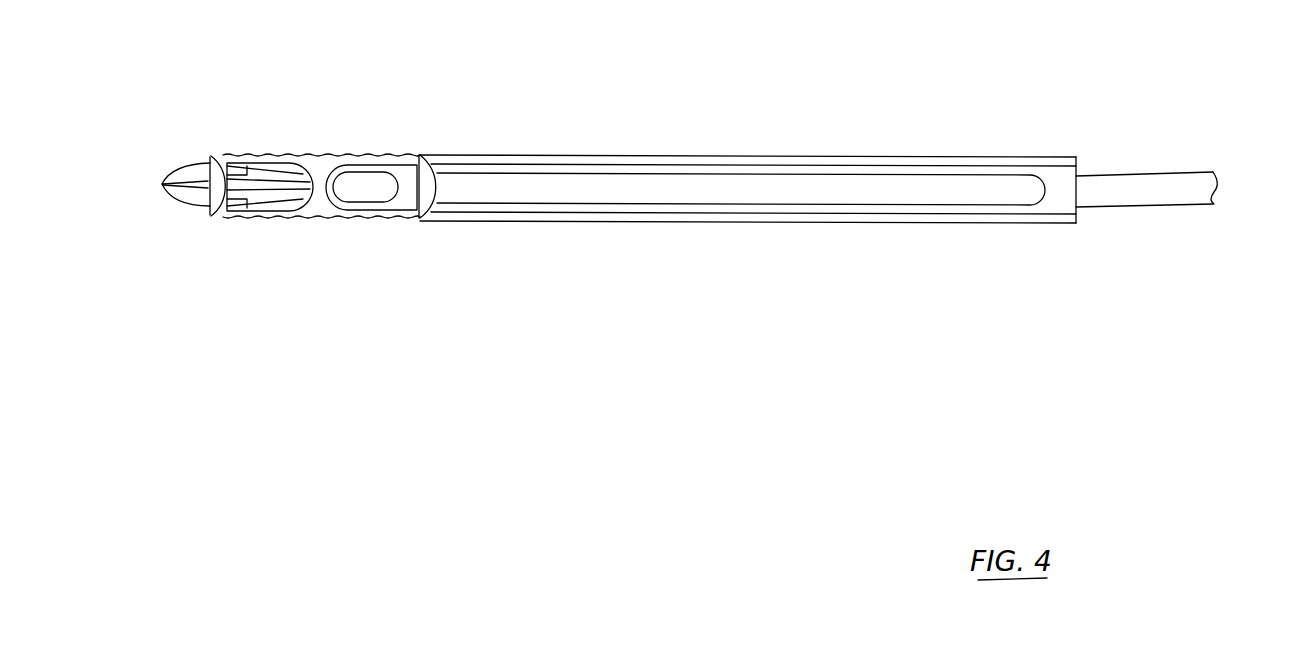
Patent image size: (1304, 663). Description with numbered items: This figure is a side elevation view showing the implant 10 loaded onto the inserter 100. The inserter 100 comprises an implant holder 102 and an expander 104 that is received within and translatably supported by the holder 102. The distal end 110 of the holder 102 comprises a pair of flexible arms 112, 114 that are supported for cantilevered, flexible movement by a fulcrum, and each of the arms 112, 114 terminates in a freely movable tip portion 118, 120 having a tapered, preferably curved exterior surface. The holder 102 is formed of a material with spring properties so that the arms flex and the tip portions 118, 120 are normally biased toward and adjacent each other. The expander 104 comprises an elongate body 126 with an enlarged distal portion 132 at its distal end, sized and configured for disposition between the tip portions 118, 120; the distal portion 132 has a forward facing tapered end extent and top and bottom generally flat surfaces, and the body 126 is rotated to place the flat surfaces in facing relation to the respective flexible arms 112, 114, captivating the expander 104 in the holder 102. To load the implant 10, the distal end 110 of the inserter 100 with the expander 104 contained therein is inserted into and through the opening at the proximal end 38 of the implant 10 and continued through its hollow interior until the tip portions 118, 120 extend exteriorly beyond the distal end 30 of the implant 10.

The implant 10 is at (309, 116).
The distal end 30 is at (205, 205).
The proximal end 38 is at (432, 168).
The inserter 100 is at (757, 97).
The implant holder 102 is at (762, 155).
The expander 104 is at (385, 188).
The distal end 110 is at (198, 168).
The flexible arm 112 is at (277, 173).
The flexible arm 114 is at (277, 202).
The tip portion 118 is at (178, 172).
The tip portion 120 is at (177, 203).
The elongate body 126 is at (655, 192).
The enlarged distal portion 132 is at (368, 190).